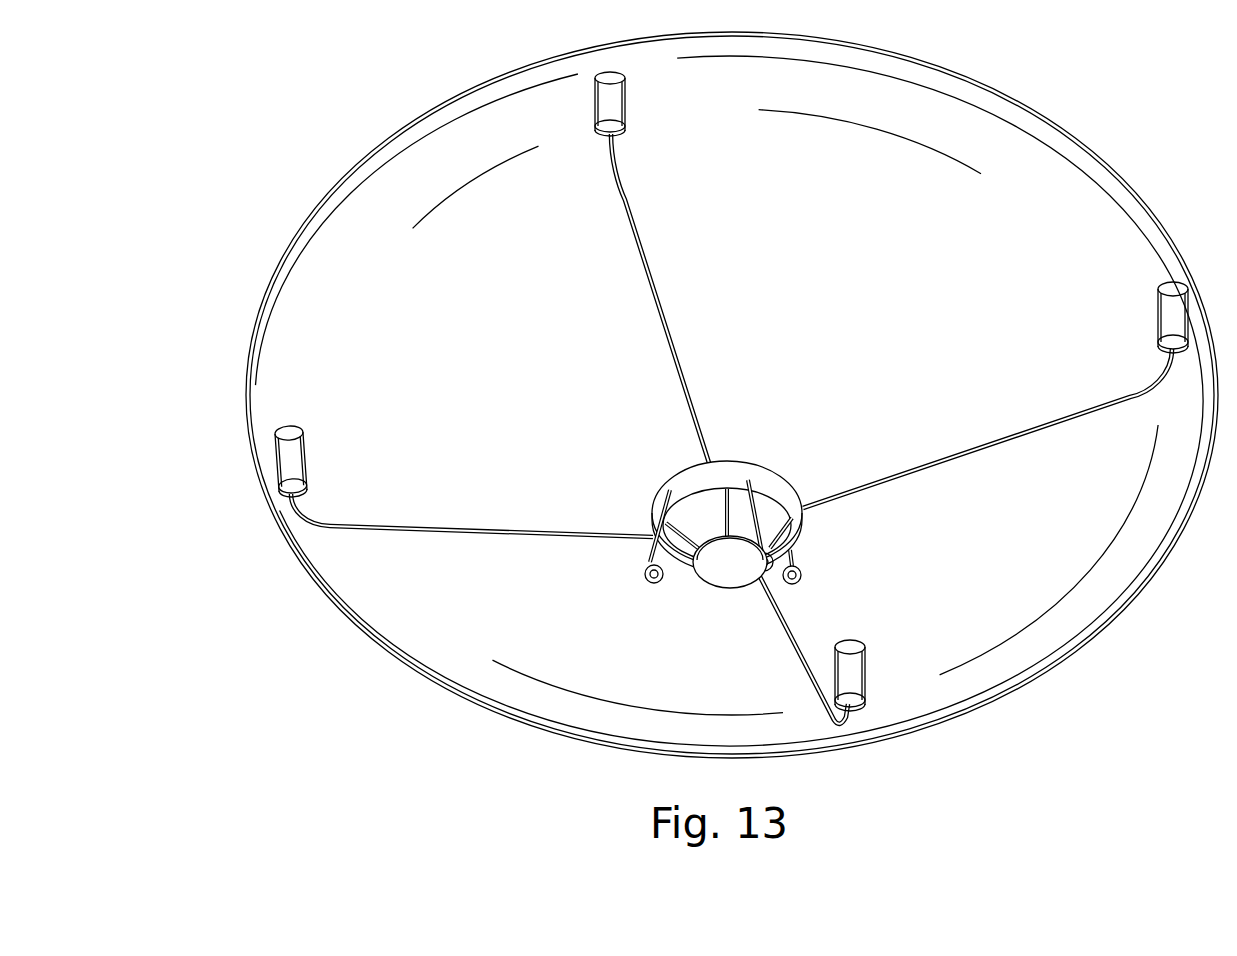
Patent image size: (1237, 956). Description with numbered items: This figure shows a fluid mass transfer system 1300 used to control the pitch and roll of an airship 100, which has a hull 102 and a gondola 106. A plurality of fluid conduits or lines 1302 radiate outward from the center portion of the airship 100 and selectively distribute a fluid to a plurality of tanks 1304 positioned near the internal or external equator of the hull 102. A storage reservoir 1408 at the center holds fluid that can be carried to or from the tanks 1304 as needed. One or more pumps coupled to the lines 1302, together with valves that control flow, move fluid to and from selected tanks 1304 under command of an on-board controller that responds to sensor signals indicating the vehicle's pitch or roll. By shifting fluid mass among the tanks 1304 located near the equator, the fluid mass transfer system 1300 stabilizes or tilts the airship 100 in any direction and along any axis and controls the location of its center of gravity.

The airship 100 is at (721, 395).
The hull 102 is at (312, 585).
The gondola 106 is at (742, 568).
The fluid mass transfer system 1300 is at (731, 398).
The fluid conduits or lines 1302 is at (430, 536).
The tanks 1304 is at (303, 466).
The storage reservoir 1408 is at (745, 476).